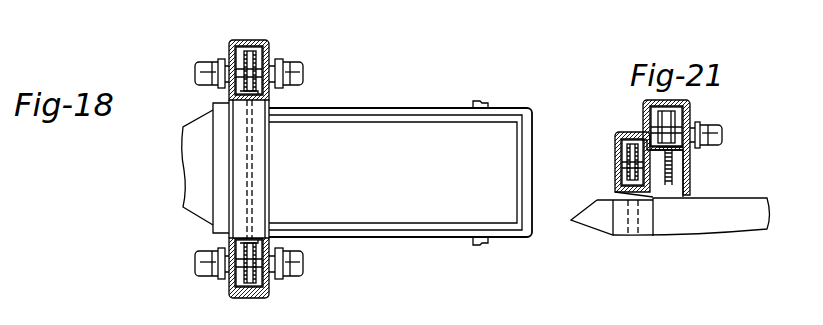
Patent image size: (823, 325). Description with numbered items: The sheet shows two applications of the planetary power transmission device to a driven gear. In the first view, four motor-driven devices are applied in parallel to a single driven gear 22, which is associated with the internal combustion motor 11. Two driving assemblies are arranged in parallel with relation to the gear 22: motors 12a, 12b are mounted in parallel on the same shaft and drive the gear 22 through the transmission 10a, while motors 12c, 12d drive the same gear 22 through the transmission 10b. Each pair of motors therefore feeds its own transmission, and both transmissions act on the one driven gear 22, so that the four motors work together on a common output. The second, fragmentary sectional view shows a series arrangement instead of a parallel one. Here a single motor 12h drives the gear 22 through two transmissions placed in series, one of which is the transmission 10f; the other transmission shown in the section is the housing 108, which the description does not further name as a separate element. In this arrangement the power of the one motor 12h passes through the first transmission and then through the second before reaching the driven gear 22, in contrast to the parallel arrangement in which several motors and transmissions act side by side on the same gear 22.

In FIG. 18, the internal combustion motor 11 is at (352, 135).
In FIG. 18, the gear 22 is at (253, 157).
In FIG. 21, the gear 22 is at (648, 200).
In FIG. 18, the transmission 10a is at (250, 57).
In FIG. 18, the transmission 10b is at (257, 298).
In FIG. 21, the transmission 10f is at (687, 108).
In FIG. 21, the auxiliary gear housing 108 is at (635, 137).
In FIG. 18, the motor 12a is at (210, 68).
In FIG. 18, the motor 12b is at (287, 68).
In FIG. 18, the motor 12c is at (203, 272).
In FIG. 18, the motor 12d is at (288, 277).
In FIG. 21, the motor 12h is at (722, 135).